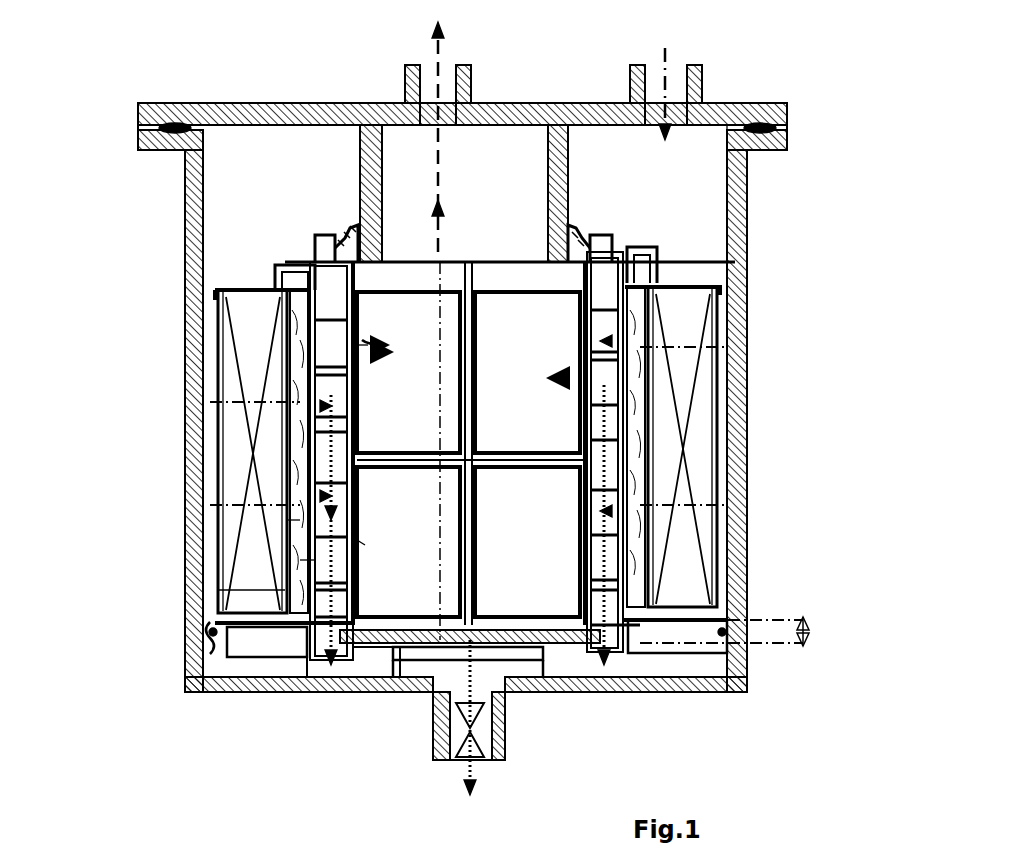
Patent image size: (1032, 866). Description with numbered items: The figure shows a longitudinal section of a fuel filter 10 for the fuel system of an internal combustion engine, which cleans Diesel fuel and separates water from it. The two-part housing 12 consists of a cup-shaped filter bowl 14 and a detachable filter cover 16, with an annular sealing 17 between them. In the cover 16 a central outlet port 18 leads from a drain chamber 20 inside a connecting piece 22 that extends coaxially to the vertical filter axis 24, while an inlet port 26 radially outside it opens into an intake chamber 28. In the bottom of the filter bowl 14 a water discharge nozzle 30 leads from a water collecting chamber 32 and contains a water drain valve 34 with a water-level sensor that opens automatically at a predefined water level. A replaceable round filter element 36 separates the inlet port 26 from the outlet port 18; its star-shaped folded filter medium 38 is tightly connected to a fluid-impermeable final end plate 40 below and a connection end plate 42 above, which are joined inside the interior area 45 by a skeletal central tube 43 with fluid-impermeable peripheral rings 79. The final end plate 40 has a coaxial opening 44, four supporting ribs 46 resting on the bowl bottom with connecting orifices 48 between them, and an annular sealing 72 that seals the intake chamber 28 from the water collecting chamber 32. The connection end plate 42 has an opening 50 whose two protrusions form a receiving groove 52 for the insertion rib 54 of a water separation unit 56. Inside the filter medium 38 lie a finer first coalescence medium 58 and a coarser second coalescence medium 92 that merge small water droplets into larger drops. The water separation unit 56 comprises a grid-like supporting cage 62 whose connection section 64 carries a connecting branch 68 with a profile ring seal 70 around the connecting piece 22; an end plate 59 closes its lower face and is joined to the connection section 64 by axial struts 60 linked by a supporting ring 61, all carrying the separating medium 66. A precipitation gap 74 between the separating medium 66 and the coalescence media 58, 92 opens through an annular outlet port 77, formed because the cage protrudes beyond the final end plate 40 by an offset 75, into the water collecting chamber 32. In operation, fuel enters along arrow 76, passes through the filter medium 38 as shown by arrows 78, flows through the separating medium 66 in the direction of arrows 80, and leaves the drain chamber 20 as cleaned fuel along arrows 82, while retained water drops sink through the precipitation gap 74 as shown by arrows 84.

The fuel filter 10 is at (82, 100).
The housing 12 is at (165, 207).
The filter bowl 14 is at (190, 270).
The filter cover 16 is at (255, 105).
The annular sealing 17 is at (790, 138).
The outlet port 18 is at (403, 82).
The drain chamber 20 is at (465, 193).
The connecting piece 22 is at (365, 162).
The filter axis 24 is at (478, 290).
The inlet port 26 is at (705, 82).
The intake chamber 28 is at (647, 193).
The water discharge nozzle 30 is at (440, 768).
The water collecting chamber 32 is at (530, 660).
The water drain valve 34 is at (490, 742).
The filter element 36 is at (262, 268).
The filter medium 38 is at (240, 348).
The final end plate 40 is at (260, 660).
The connection end plate 42 is at (272, 290).
The central tube 43 is at (300, 455).
The opening 44 is at (300, 672).
The interior area 45 is at (315, 562).
The supporting ribs 46 is at (375, 660).
The connecting orifices 48 is at (430, 672).
The opening 50 is at (362, 305).
The receiving groove 52 is at (710, 272).
The insertion rib 54 is at (655, 262).
The water separation unit 56 is at (300, 242).
The first coalescence medium 58 is at (300, 522).
The end plate 59 is at (433, 705).
The axial struts 60 is at (480, 332).
The supporting ring 61 is at (480, 480).
The supporting cage 62 is at (362, 545).
The connection section 64 is at (612, 250).
The separating medium 66 is at (615, 665).
The connecting branch 68 is at (322, 235).
The profile ring seal 70 is at (577, 216).
The annular sealing 72 is at (210, 632).
The precipitation gap 74 is at (285, 592).
The offset 75 is at (810, 633).
The arrow 76 is at (662, 52).
The outlet port 77 is at (700, 655).
The arrows 78 is at (740, 352).
The peripheral rings 79 is at (357, 418).
The arrows 80 is at (370, 355).
The arrows 82 is at (450, 52).
The arrows 84 is at (660, 660).
The second coalescence medium 92 is at (292, 400).